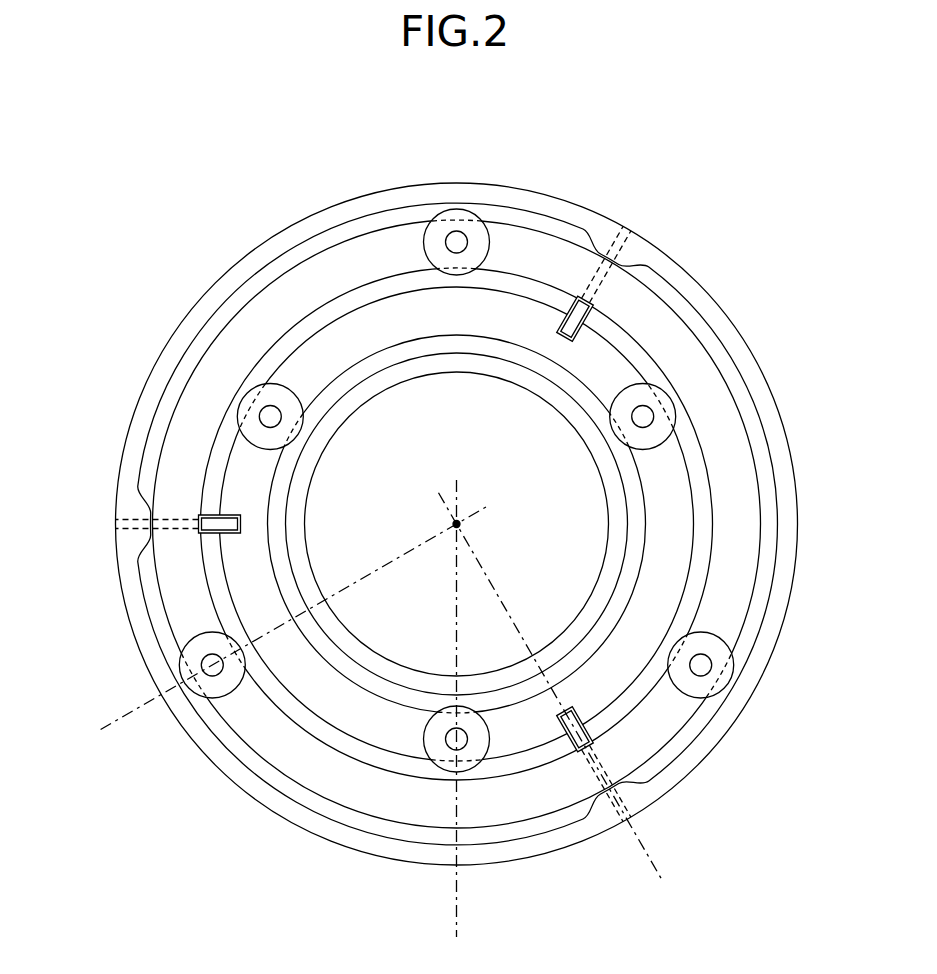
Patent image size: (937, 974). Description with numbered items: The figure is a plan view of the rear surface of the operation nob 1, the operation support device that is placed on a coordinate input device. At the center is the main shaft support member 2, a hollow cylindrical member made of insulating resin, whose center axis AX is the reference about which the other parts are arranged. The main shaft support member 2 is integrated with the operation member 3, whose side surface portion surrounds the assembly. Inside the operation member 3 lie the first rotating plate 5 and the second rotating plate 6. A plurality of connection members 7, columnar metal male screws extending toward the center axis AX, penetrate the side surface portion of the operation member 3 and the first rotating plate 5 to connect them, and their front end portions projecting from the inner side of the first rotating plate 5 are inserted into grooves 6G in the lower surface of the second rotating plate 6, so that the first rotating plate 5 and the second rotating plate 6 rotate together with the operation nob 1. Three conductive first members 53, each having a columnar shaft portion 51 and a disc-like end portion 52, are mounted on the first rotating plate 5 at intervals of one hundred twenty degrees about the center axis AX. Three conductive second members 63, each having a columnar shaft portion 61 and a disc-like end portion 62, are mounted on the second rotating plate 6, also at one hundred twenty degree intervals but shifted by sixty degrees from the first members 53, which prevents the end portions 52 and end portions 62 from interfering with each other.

The operation nob 1 is at (732, 197).
The main shaft support member 2 is at (613, 521).
The operation member 3 is at (800, 524).
The first rotating plate 5 is at (665, 715).
The second rotating plate 6 is at (522, 732).
The groove 6G is at (556, 716).
The connection member 7 is at (602, 770).
The shaft portion 51 is at (456, 242).
The end portion 52 is at (478, 242).
The first member 53 is at (518, 131).
The shaft portion 61 is at (266, 417).
The end portion 62 is at (262, 441).
The second member 63 is at (60, 372).
The center axis AX is at (457, 525).